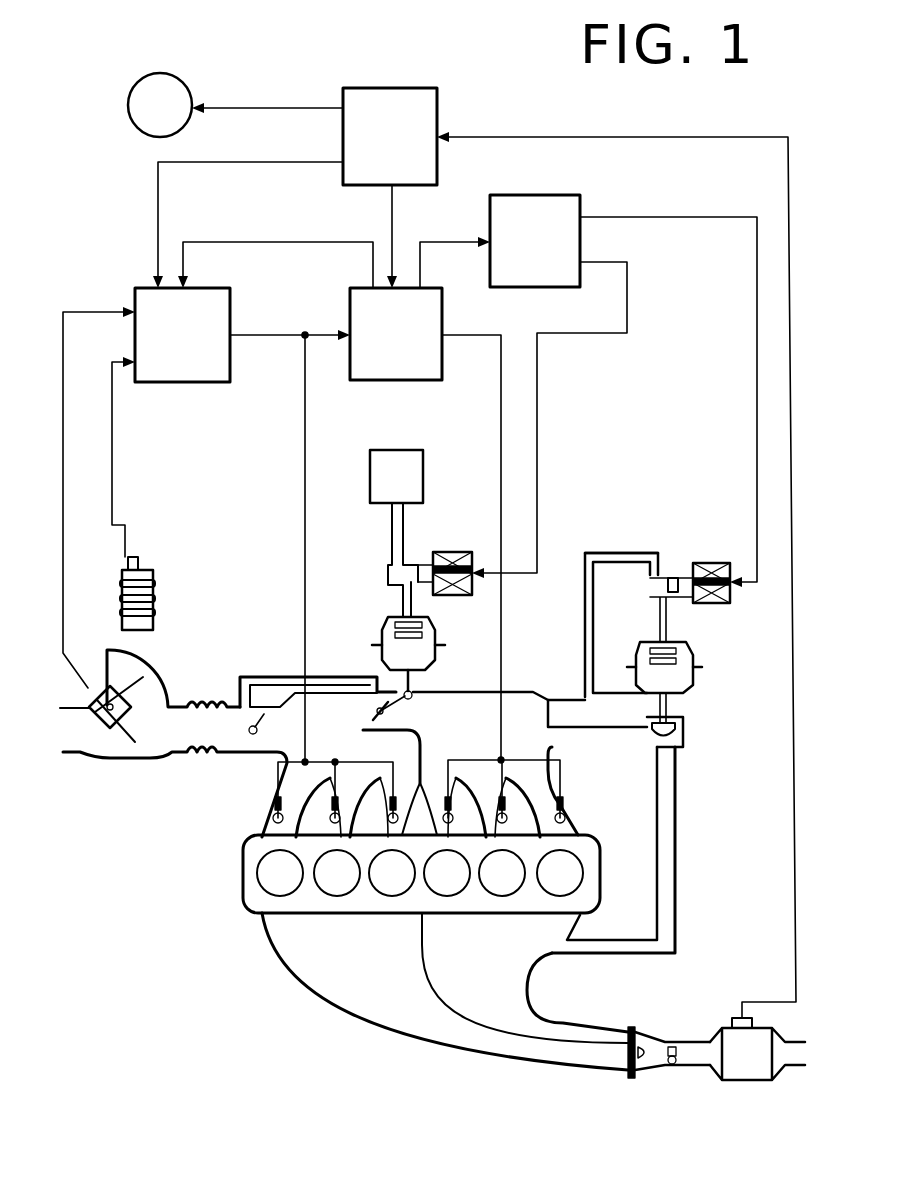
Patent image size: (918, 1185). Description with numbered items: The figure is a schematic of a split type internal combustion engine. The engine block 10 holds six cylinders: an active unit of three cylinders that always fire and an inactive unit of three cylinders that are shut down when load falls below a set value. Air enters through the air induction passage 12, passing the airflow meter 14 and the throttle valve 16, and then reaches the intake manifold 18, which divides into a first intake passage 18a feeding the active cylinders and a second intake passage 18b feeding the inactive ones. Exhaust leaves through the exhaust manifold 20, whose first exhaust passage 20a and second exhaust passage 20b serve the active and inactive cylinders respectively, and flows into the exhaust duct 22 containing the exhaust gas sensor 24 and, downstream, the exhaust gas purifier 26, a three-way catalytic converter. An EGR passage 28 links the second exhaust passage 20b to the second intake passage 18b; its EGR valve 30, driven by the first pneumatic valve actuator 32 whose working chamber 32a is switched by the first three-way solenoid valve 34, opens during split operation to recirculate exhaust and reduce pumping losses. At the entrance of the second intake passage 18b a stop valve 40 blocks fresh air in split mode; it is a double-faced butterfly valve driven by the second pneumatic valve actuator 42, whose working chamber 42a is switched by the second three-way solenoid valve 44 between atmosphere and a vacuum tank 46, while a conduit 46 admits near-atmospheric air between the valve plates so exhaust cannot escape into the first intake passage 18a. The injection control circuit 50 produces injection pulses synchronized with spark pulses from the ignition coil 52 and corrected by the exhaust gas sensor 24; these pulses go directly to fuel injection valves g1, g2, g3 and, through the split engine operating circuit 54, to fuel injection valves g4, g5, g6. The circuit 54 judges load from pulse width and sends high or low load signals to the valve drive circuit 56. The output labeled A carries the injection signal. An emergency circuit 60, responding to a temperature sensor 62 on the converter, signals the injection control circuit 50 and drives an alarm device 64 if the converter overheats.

The engine block 10 is at (243, 880).
The air induction passage 12 is at (128, 760).
The airflow meter 14 is at (156, 658).
The throttle valve 16 is at (248, 735).
The intake manifold 18 is at (443, 687).
The first intake passage 18a is at (290, 777).
The second intake passage 18b is at (470, 691).
The exhaust manifold 20 is at (436, 1054).
The first exhaust passage 20a is at (325, 958).
The second exhaust passage 20b is at (503, 978).
The exhaust duct 22 is at (693, 1055).
The exhaust gas sensor 24 is at (671, 1068).
The exhaust gas purifier 26 is at (760, 1075).
The EGR passage 28 is at (662, 874).
The EGR valve 30 is at (682, 728).
The first pneumatic valve actuator 32 is at (712, 668).
The working chamber 32a is at (645, 658).
The first three-way solenoid valve 34 is at (720, 548).
The stop valve 40 is at (390, 712).
The second pneumatic valve actuator 42 is at (388, 612).
The working chamber 42a is at (386, 640).
The second three-way solenoid valve 44 is at (456, 551).
The conduit and vacuum tank 46 is at (400, 450).
The injection control circuit 50 is at (182, 335).
The ignition coil 52 is at (151, 575).
The split engine operating circuit 54 is at (396, 334).
The valve drive circuit 56 is at (535, 241).
The emergency circuit 60 is at (390, 136).
The temperature sensor 62 is at (738, 1018).
The alarm device 64 is at (192, 101).
The control signal A is at (279, 338).
The fuel injection valve g1 is at (271, 824).
The fuel injection valve g2 is at (335, 823).
The fuel injection valve g3 is at (392, 823).
The fuel injection valve g4 is at (452, 824).
The fuel injection valve g5 is at (508, 824).
The fuel injection valve g6 is at (567, 817).